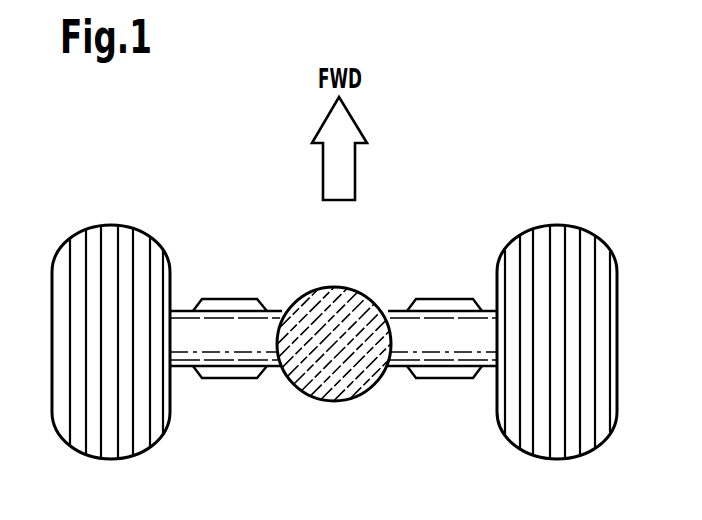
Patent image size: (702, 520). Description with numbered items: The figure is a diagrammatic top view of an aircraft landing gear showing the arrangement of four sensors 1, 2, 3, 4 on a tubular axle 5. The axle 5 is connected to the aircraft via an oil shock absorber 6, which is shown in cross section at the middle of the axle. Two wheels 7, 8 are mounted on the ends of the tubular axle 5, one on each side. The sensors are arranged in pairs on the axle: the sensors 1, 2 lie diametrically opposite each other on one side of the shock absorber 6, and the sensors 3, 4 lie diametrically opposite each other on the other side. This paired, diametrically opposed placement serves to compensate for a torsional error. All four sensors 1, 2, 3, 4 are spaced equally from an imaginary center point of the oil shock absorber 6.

The sensor 1 is at (226, 304).
The sensor 2 is at (230, 374).
The sensor 3 is at (441, 304).
The sensor 4 is at (445, 374).
The axle 5 is at (273, 328).
The oil shock absorber 6 is at (343, 300).
The wheel 7 is at (111, 237).
The wheel 8 is at (556, 237).